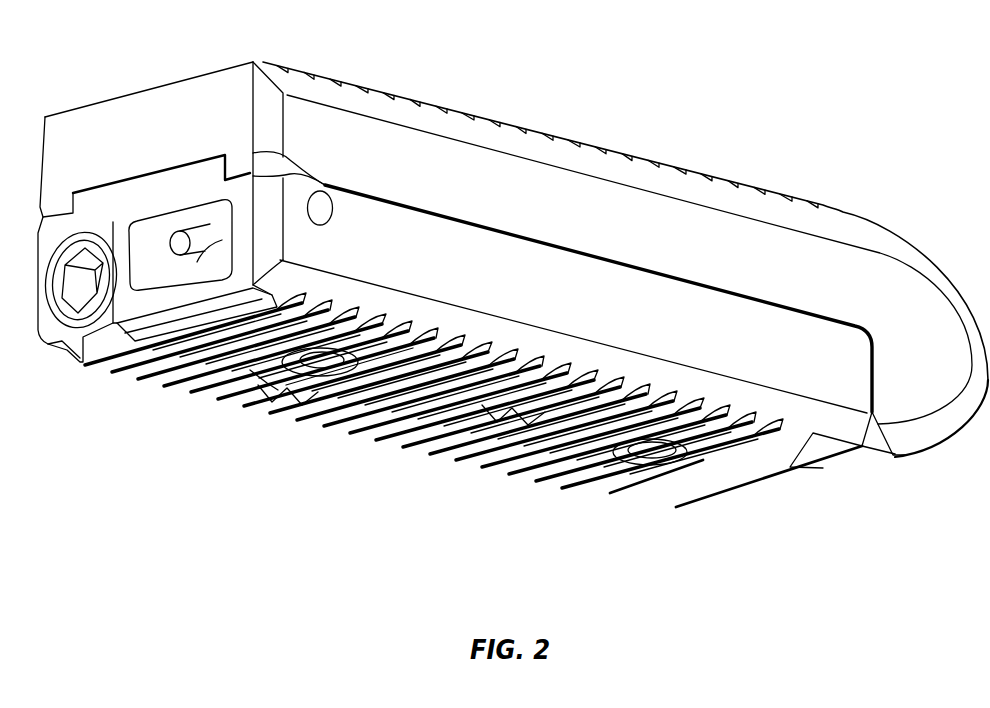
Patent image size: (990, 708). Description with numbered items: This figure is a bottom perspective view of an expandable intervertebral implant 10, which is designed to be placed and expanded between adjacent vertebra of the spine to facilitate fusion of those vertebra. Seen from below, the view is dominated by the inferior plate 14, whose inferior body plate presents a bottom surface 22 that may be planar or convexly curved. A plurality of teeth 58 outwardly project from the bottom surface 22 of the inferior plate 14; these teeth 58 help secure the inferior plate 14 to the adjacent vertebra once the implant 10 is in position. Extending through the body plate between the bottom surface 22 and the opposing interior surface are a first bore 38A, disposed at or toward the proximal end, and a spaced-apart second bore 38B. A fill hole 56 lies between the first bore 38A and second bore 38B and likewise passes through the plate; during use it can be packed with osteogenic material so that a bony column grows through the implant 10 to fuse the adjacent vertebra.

The expandable intervertebral implant 10 is at (828, 64).
The inferior plate 14 is at (597, 328).
The bottom surface 22 is at (390, 405).
The fill hole 56 is at (542, 410).
The teeth 58 is at (316, 415).
The first bore 38A is at (262, 375).
The second bore 38B is at (657, 476).